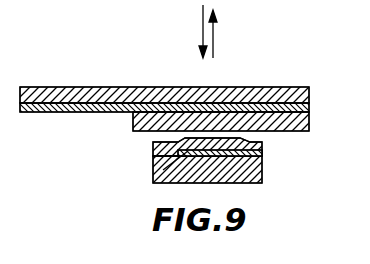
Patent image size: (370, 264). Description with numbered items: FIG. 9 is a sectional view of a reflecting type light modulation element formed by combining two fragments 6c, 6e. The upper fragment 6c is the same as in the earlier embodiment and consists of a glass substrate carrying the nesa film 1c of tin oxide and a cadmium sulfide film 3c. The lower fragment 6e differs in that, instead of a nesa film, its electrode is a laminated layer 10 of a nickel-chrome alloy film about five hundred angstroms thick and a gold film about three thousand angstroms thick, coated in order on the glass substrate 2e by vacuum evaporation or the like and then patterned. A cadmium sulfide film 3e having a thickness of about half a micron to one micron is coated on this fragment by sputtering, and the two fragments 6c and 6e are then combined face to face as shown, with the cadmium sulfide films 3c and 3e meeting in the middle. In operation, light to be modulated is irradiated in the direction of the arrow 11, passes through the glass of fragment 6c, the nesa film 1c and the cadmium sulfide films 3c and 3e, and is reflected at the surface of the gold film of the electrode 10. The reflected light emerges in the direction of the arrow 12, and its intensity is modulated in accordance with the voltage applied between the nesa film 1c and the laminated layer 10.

The nesa film 1c is at (309, 107).
The cadmium sulfide film 3c is at (303, 132).
The fragment 6c is at (286, 87).
The glass substrate 2e is at (160, 167).
The cadmium sulfide film 3e is at (262, 155).
The fragment 6e is at (256, 185).
The laminated layer electrode 10 is at (172, 186).
The arrow 11 is at (200, 30).
The arrow 12 is at (217, 30).